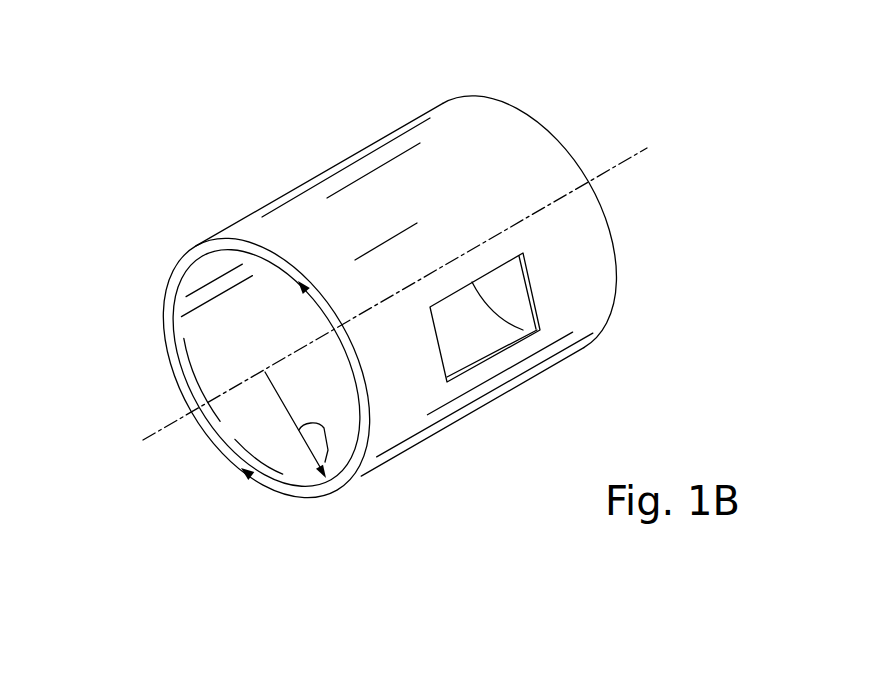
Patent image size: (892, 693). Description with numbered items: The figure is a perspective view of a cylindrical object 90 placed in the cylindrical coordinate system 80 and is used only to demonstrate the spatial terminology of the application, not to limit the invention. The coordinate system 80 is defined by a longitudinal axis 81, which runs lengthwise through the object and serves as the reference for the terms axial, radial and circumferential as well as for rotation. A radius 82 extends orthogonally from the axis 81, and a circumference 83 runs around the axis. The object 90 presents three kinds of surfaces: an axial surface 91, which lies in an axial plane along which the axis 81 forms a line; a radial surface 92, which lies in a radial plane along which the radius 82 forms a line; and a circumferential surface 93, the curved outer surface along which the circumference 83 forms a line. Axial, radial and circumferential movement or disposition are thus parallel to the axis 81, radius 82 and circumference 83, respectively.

The cylindrical coordinate system 80 is at (567, 100).
The longitudinal axis 81 is at (150, 440).
The radius 82 is at (346, 486).
The circumference 83 is at (173, 270).
The cylindrical object 90 is at (427, 85).
The axial surface 91 is at (506, 337).
The radial surface 92 is at (278, 486).
The circumferential surface 93 is at (372, 190).